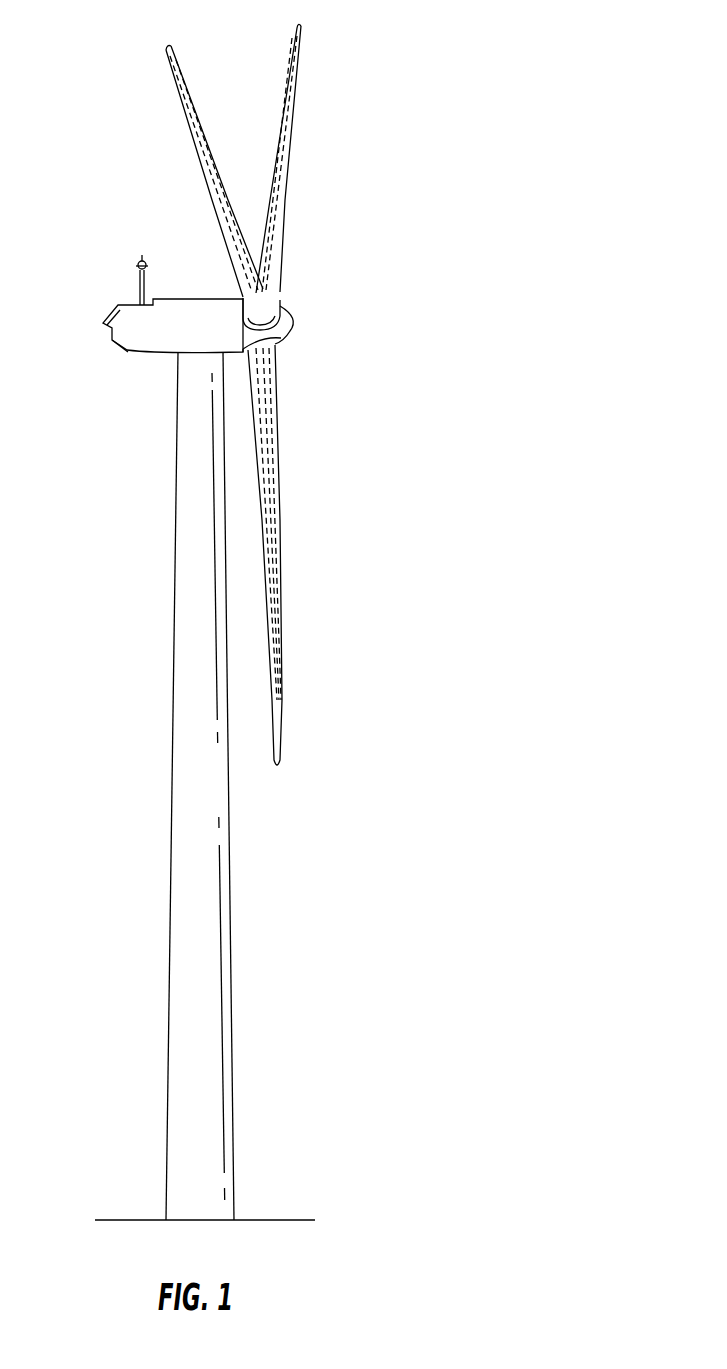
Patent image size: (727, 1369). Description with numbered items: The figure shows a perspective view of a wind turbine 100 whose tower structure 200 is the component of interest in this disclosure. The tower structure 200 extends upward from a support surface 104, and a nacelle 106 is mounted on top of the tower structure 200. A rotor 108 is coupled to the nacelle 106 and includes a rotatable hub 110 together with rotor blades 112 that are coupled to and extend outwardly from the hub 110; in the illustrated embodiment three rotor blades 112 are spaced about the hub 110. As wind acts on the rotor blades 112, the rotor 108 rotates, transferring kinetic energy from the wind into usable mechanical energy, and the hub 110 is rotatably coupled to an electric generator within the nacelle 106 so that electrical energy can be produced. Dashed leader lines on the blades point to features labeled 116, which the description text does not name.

The wind turbine 100 is at (308, 622).
The support surface 104 is at (140, 1220).
The nacelle 106 is at (150, 353).
The rotor 108 is at (274, 394).
The rotatable hub 110 is at (292, 321).
The rotor blade 112 is at (282, 145).
The spar cap 116 is at (207, 197).
The tower structure 200 is at (210, 867).